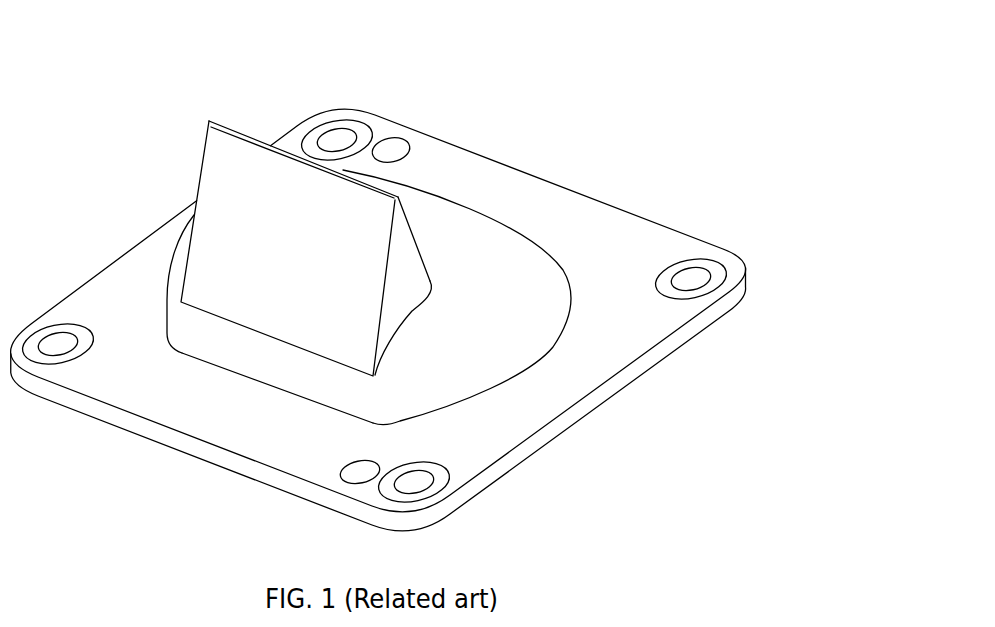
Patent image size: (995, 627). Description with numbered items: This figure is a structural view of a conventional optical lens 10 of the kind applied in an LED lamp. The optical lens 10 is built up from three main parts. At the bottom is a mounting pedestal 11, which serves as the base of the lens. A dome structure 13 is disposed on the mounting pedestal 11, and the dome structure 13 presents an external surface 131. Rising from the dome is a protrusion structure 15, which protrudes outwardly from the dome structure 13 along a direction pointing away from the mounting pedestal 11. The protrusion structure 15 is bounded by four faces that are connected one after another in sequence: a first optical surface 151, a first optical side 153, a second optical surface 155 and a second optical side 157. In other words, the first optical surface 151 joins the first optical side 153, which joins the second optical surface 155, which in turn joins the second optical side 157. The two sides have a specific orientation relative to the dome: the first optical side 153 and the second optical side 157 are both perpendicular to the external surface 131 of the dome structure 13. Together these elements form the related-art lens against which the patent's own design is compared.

The optical lens 10 is at (378, 287).
The mounting pedestal 11 is at (602, 222).
The dome structure 13 is at (355, 300).
The external surface 131 is at (272, 363).
The protrusion structure 15 is at (375, 251).
The first optical surface 151 is at (415, 218).
The first optical side 153 is at (400, 265).
The second optical surface 155 is at (237, 245).
The second optical side 157 is at (185, 156).